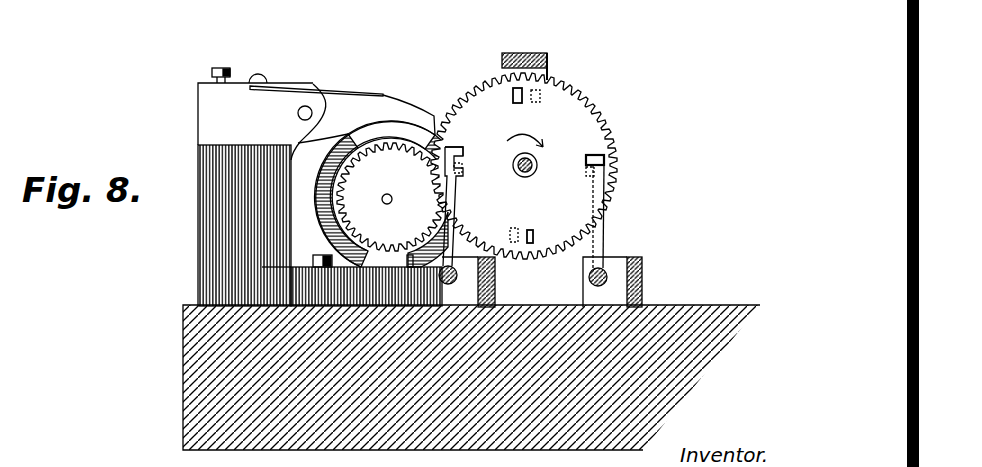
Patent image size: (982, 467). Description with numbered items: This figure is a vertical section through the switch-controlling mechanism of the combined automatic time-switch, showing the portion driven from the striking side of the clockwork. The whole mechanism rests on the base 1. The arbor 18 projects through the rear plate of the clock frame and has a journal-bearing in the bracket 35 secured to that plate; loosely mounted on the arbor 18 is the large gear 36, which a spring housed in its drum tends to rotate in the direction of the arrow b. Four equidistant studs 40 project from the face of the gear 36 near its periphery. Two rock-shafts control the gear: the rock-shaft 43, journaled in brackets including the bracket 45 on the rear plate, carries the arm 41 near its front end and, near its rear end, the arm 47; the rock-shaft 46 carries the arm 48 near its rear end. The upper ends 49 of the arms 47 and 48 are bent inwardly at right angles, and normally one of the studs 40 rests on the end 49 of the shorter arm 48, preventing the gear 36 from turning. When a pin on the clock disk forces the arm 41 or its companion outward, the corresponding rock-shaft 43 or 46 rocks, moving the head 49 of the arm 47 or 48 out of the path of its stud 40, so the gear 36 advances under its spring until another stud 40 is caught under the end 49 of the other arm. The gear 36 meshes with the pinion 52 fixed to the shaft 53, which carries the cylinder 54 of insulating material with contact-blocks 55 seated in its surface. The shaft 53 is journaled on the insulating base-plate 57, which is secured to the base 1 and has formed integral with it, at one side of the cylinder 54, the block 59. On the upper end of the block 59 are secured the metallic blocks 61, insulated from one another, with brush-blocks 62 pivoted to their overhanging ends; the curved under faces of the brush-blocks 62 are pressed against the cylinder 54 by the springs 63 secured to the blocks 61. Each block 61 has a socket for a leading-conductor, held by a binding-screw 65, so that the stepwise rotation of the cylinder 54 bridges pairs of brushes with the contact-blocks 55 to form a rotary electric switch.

The base 1 is at (183, 350).
The arbor 18 is at (525, 177).
The bracket 35 is at (524, 57).
The large gear 36 is at (533, 166).
The studs 40 is at (513, 101).
The arm 41 is at (643, 268).
The rock-shaft 43 is at (496, 270).
The bracket 45 is at (496, 292).
The rock-shaft 46 is at (590, 280).
The arm 47 is at (457, 203).
The arm 48 is at (593, 206).
The upper ends 49 is at (461, 147).
The pinion 52 is at (391, 197).
The shaft 53 is at (382, 200).
The cylinder 54 is at (322, 165).
The contact-blocks 55 is at (391, 136).
The base-plate 57 is at (352, 280).
The block 59 is at (198, 190).
The metallic blocks 61 is at (262, 117).
The brush-blocks 62 is at (366, 119).
The springs 63 is at (324, 87).
The binding-screw 65 is at (223, 68).